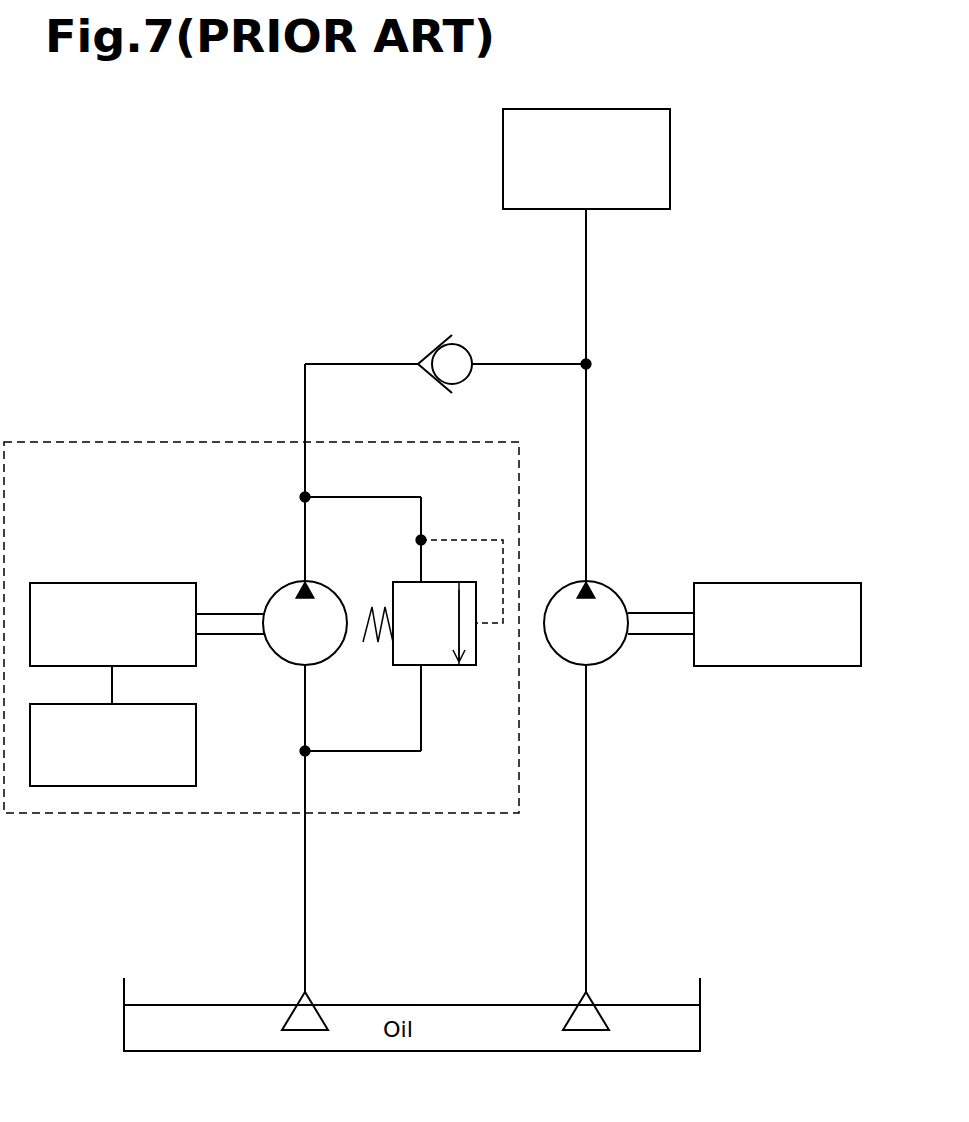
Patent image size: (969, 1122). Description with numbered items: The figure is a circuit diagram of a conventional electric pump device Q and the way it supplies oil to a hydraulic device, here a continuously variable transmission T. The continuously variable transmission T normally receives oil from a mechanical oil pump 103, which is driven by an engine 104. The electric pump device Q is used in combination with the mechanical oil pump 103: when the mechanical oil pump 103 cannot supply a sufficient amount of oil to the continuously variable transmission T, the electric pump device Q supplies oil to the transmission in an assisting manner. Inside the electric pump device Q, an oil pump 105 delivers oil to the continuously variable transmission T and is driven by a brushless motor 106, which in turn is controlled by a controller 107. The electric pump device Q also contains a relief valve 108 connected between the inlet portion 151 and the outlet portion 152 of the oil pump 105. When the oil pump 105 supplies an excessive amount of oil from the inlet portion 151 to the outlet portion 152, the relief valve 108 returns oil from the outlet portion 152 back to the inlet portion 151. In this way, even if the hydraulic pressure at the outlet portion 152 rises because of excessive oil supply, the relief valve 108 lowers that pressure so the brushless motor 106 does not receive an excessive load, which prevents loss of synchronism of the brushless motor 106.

The mechanical oil pump 103 is at (625, 581).
The engine 104 is at (755, 583).
The oil pump 105 is at (345, 587).
The brushless motor 106 is at (150, 583).
The controller 107 is at (196, 765).
The relief valve 108 is at (471, 680).
The inlet portion 151 is at (289, 692).
The outlet portion 152 is at (291, 554).
The electric pump device Q is at (95, 442).
The continuously variable transmission T is at (670, 152).